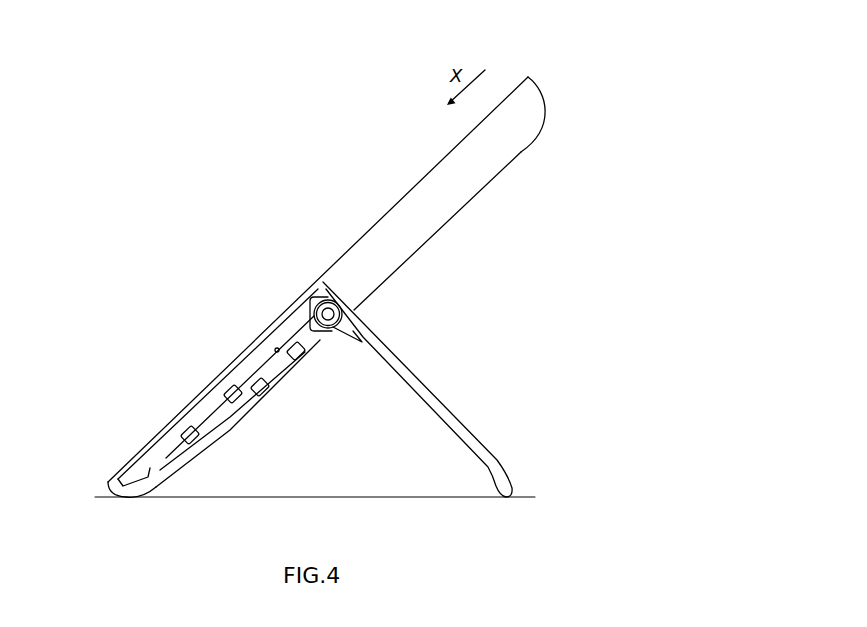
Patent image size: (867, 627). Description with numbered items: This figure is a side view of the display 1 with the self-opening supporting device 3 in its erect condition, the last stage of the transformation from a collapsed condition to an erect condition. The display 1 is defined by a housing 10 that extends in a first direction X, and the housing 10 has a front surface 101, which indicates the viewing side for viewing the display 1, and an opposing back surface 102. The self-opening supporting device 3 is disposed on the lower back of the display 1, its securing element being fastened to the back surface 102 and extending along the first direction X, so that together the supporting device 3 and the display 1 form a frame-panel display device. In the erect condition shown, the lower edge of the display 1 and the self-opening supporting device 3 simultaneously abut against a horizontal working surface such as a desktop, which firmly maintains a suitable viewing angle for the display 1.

The display 1 is at (364, 268).
The housing 10 is at (331, 287).
The front surface 101 is at (390, 211).
The back surface 102 is at (438, 233).
The self-opening supporting device 3 is at (361, 416).